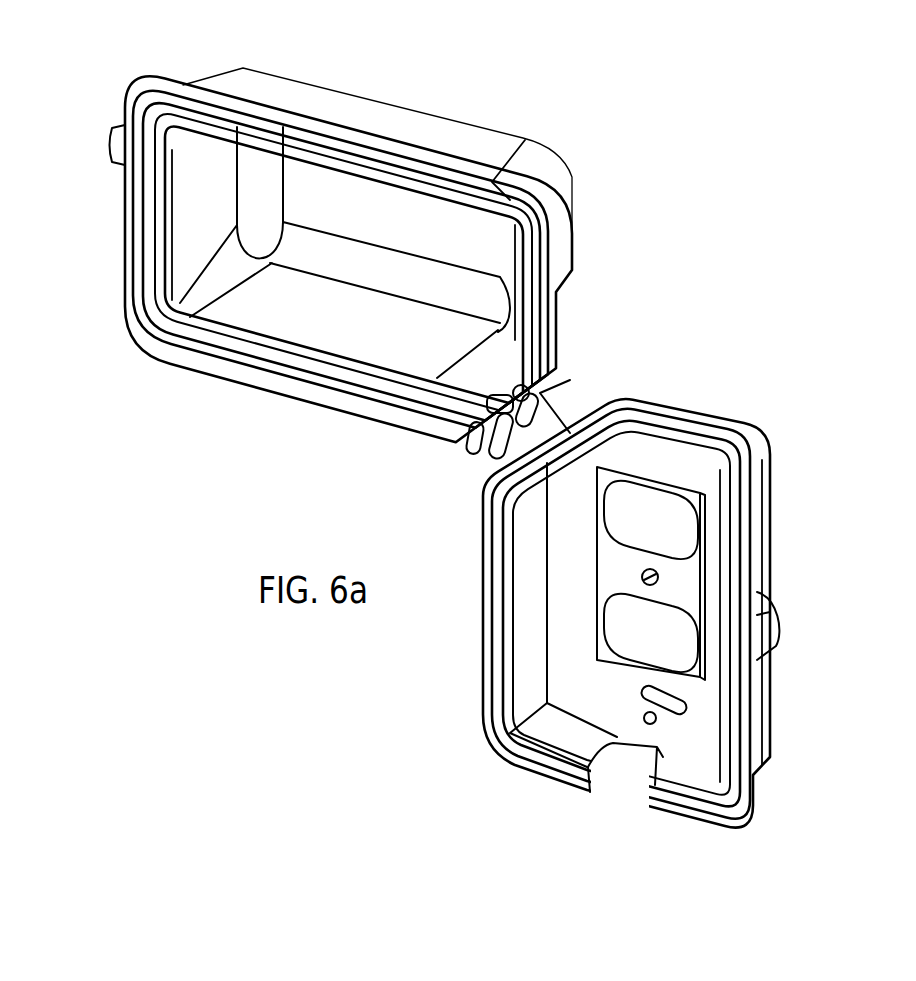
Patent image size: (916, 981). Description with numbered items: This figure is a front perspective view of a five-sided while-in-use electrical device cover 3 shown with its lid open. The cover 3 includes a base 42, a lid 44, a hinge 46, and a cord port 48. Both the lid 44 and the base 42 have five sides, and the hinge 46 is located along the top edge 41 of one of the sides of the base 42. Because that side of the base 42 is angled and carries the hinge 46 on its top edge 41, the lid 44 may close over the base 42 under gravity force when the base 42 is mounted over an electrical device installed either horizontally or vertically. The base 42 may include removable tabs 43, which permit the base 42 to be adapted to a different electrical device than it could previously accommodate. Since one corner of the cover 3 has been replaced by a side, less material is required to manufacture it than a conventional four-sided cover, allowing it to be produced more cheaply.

The cover 3 is at (692, 388).
The top edge 41 is at (493, 762).
The base 42 is at (772, 468).
The removable tabs 43 is at (703, 594).
The lid 44 is at (573, 177).
The hinge 46 is at (562, 383).
The cord port 48 is at (617, 772).